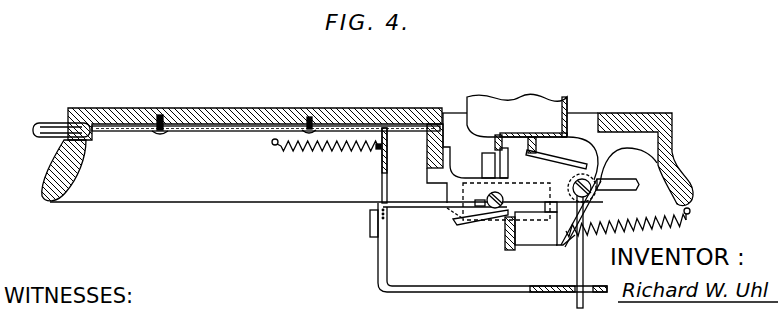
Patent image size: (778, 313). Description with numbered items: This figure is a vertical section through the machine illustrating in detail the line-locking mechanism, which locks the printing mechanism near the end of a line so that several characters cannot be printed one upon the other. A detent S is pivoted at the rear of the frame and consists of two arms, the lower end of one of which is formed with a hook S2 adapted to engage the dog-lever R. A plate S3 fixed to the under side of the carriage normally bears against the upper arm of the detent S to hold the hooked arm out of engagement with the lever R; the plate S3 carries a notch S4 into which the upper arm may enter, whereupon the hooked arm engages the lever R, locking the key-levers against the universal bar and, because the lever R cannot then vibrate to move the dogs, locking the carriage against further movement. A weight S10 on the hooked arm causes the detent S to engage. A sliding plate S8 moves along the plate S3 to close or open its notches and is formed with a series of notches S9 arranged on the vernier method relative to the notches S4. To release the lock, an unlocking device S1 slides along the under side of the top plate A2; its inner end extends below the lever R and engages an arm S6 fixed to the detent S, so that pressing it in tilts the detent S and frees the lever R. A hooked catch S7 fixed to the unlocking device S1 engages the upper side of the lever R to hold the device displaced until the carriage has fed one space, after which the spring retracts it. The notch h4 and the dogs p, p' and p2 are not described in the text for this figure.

The top plate A2 is at (230, 108).
The unlocking device S1 is at (80, 157).
The arm fixed to the detent S6 is at (588, 278).
The notch h4 is at (447, 193).
The plate S3 is at (527, 137).
The sliding plate S8 is at (543, 135).
The pin p2 is at (493, 145).
The pawl p is at (477, 165).
The pawl p' is at (513, 163).
The notch S4 is at (528, 148).
The notches of the sliding plate S9 is at (552, 157).
The detent S is at (598, 165).
The weight S10 is at (638, 186).
The catch S7 is at (419, 214).
The dog-lever R is at (505, 233).
The hook S2 is at (556, 250).